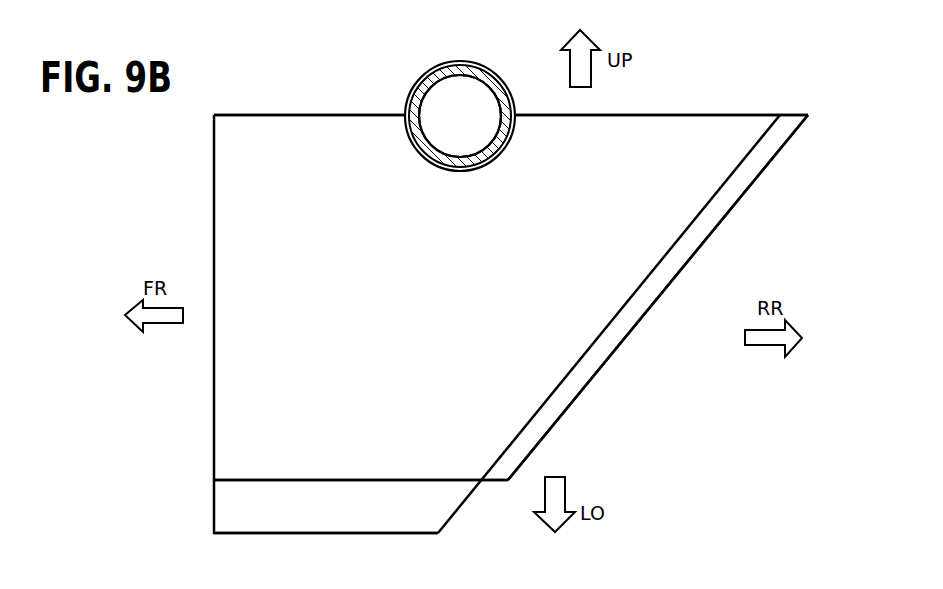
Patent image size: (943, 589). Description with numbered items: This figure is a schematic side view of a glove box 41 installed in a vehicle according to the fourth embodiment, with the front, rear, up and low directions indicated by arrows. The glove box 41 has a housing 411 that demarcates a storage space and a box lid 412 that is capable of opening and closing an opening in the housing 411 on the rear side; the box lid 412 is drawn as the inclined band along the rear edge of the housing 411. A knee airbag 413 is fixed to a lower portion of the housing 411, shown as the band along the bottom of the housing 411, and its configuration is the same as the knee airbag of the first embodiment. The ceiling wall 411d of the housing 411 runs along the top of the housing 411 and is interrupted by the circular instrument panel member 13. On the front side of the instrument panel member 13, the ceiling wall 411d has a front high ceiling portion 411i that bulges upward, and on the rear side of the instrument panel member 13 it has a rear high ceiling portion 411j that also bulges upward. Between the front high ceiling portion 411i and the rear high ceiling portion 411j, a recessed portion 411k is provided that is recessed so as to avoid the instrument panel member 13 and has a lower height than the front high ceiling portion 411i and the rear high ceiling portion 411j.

The housing 411 is at (240, 173).
The ceiling wall 411d is at (276, 108).
The front high ceiling portion 411i is at (357, 108).
The rear high ceiling portion 411j is at (648, 107).
The recessed portion 411k is at (428, 160).
The instrument panel member 13 is at (497, 80).
The glove box 41 is at (784, 107).
The box lid 412 is at (727, 218).
The knee airbag 413 is at (213, 507).